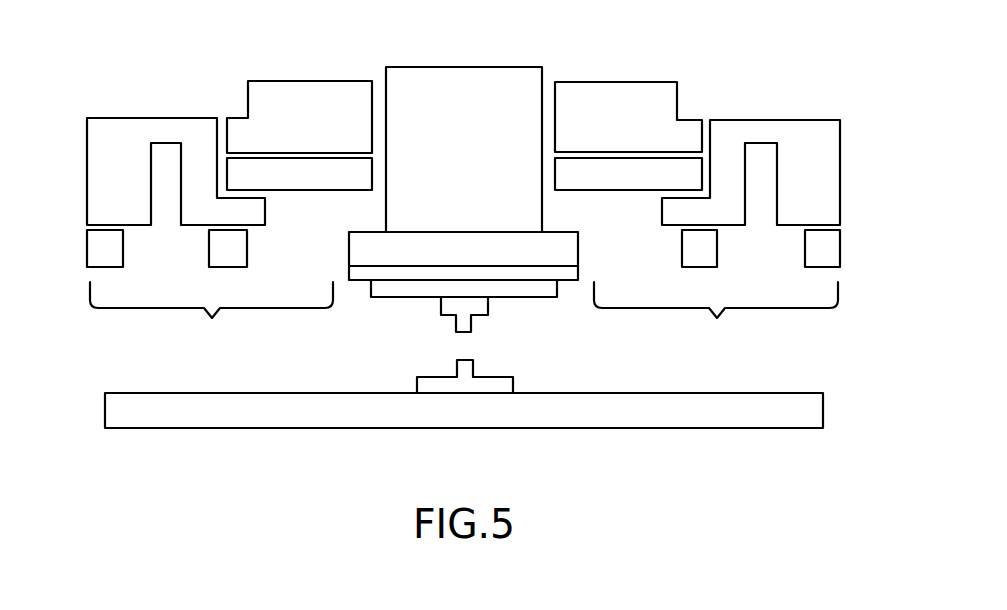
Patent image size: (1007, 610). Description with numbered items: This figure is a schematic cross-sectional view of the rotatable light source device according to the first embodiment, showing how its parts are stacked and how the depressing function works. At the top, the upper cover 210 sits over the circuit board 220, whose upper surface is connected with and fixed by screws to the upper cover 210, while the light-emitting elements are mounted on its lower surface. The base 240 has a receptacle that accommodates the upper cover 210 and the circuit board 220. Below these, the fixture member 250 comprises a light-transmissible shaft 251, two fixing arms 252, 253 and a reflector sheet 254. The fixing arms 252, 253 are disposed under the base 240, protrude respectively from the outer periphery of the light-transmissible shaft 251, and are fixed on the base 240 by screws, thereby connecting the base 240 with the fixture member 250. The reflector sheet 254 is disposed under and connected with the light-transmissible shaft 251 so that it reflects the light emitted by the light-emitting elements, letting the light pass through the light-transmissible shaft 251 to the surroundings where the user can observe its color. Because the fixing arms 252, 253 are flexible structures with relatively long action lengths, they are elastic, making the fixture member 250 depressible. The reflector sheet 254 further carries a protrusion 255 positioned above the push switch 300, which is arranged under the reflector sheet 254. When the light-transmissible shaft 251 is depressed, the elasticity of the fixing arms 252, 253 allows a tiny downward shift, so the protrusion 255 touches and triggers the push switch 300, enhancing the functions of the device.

The upper cover 210 is at (296, 95).
The circuit board 220 is at (265, 172).
The base 240 is at (123, 143).
The fixture member 250 is at (512, 54).
The light-transmissible shaft 251 is at (437, 83).
The fixing arm 252 is at (211, 316).
The fixing arm 253 is at (716, 316).
The reflector sheet 254 is at (520, 290).
The protrusion 255 is at (457, 305).
The push switch 300 is at (480, 386).